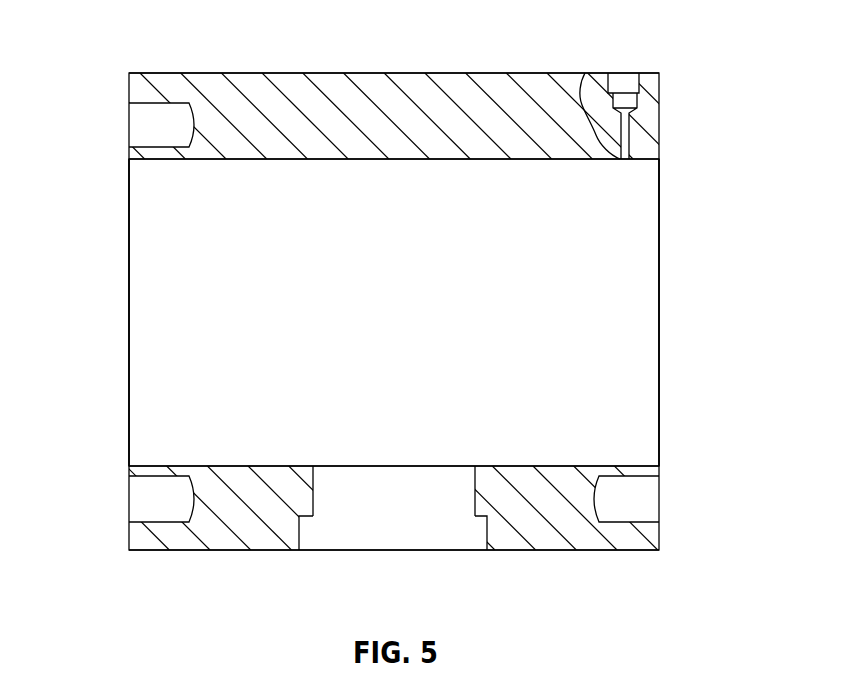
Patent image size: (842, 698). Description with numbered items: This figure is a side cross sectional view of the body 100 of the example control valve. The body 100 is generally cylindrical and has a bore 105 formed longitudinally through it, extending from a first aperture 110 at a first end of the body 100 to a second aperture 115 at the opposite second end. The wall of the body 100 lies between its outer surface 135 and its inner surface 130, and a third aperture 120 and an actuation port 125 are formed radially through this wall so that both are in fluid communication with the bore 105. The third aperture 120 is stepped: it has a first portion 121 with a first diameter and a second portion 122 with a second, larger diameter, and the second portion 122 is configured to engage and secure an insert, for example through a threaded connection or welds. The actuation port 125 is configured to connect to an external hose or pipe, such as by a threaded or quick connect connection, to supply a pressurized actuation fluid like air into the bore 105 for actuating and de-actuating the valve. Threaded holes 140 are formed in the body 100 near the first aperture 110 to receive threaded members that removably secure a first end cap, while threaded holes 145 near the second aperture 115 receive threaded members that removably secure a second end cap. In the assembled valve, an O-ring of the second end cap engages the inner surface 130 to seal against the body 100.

The body 100 is at (441, 67).
The bore 105 is at (415, 324).
The first aperture 110 is at (122, 233).
The second aperture 115 is at (667, 217).
The third aperture 120 is at (444, 558).
The first portion 121 is at (474, 489).
The second portion 122 is at (302, 533).
The actuation port 125 is at (629, 82).
The inner surface 130 is at (395, 160).
The outer surface 135 is at (289, 73).
The threaded holes 140 is at (138, 127).
The threaded holes 145 is at (648, 497).